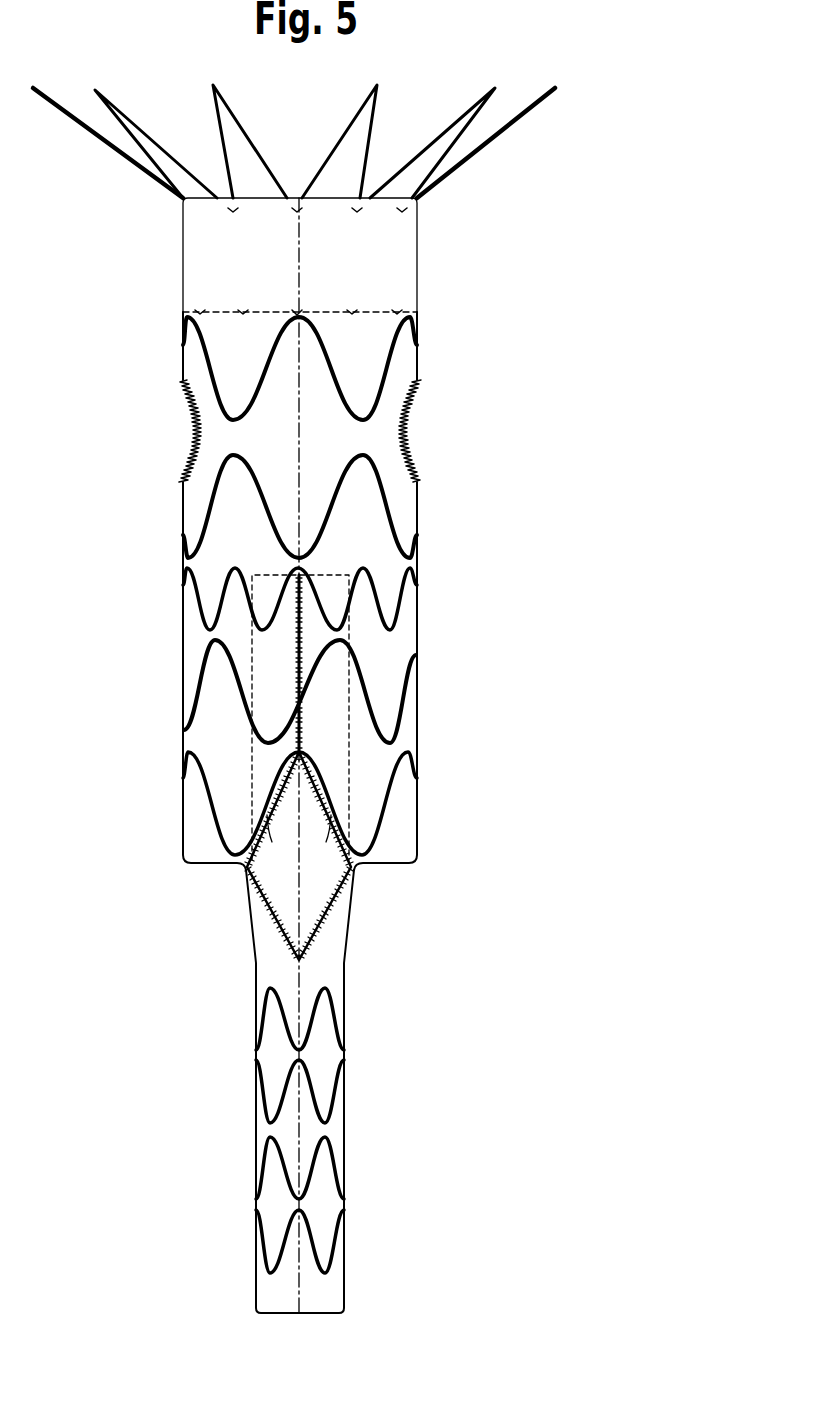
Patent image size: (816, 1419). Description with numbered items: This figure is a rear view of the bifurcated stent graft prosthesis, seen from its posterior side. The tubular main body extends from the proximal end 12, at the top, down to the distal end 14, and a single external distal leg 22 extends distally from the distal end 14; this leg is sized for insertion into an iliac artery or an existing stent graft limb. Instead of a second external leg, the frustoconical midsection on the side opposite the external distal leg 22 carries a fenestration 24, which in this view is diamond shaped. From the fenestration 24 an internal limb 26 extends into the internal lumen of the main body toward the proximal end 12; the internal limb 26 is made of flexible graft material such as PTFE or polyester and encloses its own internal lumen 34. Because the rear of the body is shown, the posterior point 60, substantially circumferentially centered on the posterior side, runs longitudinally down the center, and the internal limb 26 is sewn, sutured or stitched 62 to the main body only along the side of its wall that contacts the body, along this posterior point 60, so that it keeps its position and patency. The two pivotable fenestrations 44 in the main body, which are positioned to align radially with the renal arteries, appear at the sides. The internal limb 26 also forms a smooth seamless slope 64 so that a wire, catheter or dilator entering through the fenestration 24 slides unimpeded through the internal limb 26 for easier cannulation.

The proximal end 12 is at (417, 198).
The posterior point 60 is at (300, 282).
The pivotable fenestrations 44 is at (197, 432).
The stitching 62 is at (300, 673).
The internal limb 26 is at (330, 710).
The distal end 14 is at (408, 863).
The smooth seamless slope 64 is at (327, 865).
The internal lumen 34 is at (283, 820).
The fenestration 24 is at (333, 913).
The external distal leg 22 is at (345, 1118).